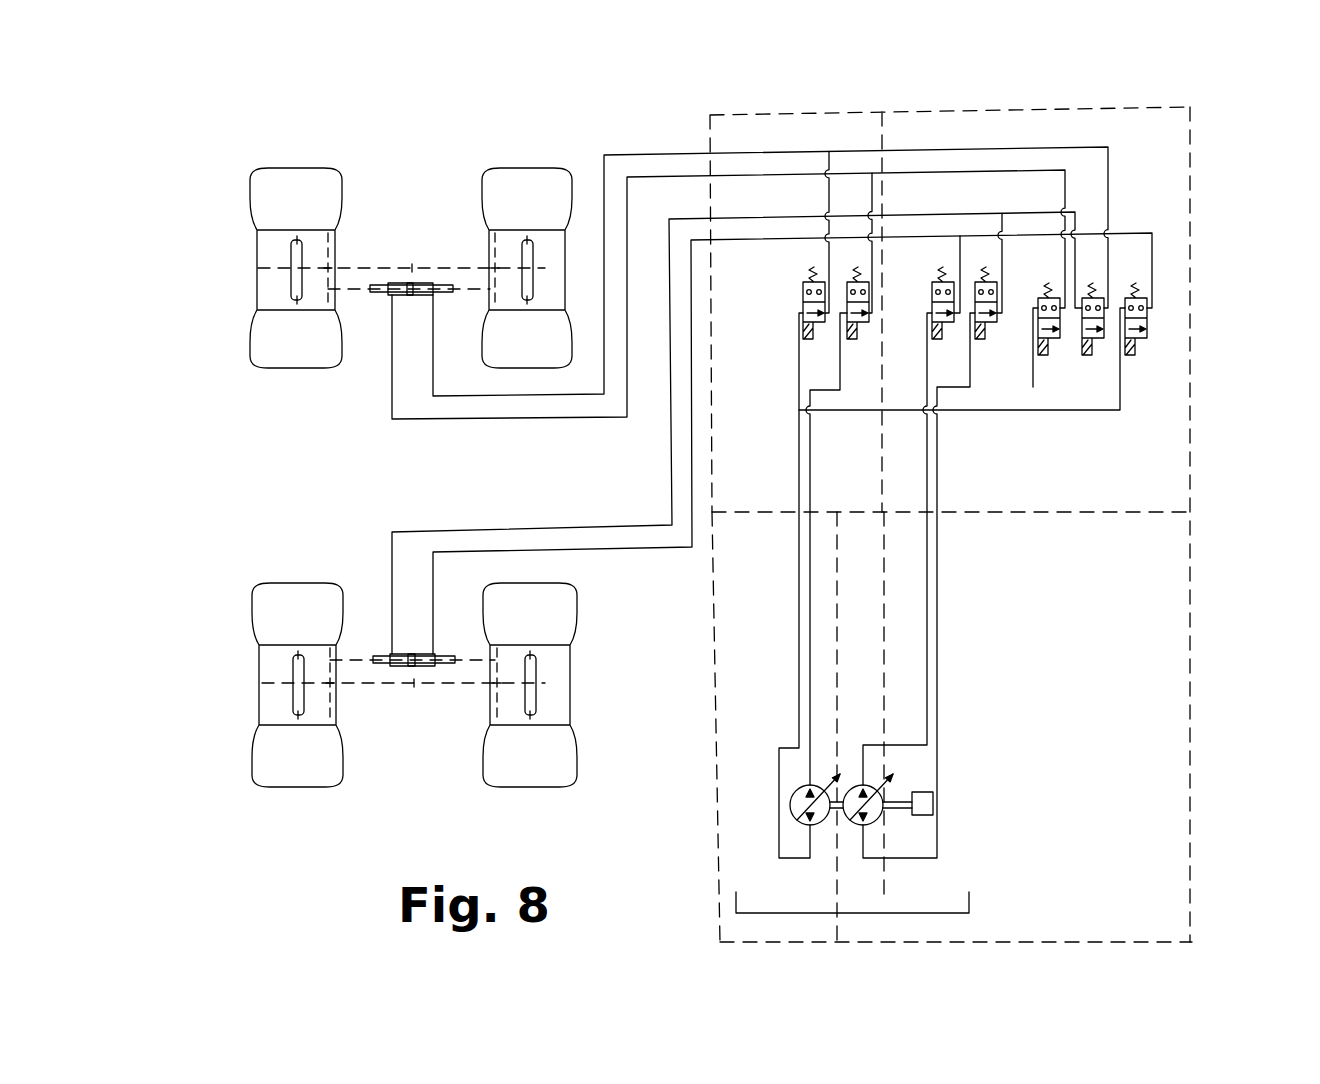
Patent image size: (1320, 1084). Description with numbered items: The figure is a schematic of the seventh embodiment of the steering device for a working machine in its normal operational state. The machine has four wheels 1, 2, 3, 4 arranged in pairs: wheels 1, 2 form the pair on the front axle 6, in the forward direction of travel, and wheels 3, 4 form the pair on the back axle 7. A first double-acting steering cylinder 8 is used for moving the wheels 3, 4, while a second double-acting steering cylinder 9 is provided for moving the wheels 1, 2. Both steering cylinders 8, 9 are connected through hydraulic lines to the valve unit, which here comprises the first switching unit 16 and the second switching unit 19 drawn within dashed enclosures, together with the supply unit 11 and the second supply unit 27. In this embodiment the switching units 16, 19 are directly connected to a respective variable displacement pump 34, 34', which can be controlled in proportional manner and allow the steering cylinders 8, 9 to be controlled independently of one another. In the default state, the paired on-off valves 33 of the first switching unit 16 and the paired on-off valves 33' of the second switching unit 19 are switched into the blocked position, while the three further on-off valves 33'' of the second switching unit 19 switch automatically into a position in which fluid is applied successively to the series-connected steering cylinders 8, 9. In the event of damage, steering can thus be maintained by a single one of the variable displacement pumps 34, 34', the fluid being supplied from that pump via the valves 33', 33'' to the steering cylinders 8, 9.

The wheel 1 is at (256, 267).
The wheel 2 is at (487, 243).
The wheel 3 is at (262, 672).
The wheel 4 is at (487, 710).
The front axle 6 is at (363, 268).
The back axle 7 is at (372, 686).
The first double-acting steering cylinder 8 is at (430, 672).
The second double-acting steering cylinder 9 is at (426, 282).
The supply unit 11 is at (717, 727).
The first switching unit 16 is at (707, 124).
The second switching unit 19 is at (1193, 157).
The second supply unit 27 is at (1193, 637).
The on-off valves 33 is at (817, 292).
The on-off valves 33' is at (1013, 347).
The further on-off valves 33'' is at (1187, 319).
The variable displacement pump 34 is at (778, 799).
The variable displacement pump 34' is at (929, 805).